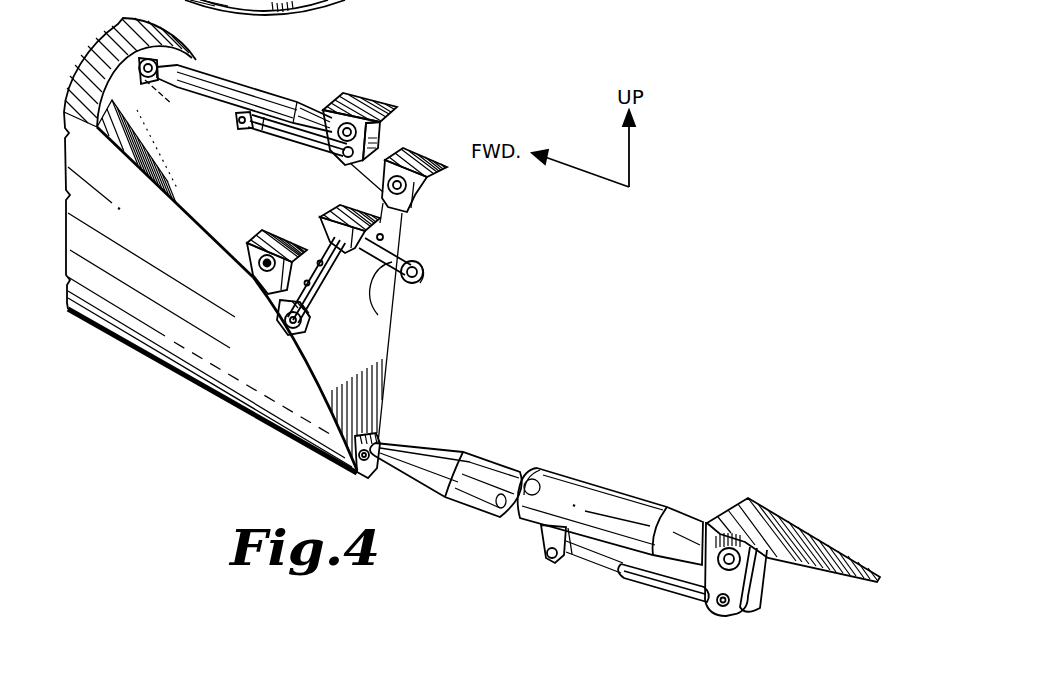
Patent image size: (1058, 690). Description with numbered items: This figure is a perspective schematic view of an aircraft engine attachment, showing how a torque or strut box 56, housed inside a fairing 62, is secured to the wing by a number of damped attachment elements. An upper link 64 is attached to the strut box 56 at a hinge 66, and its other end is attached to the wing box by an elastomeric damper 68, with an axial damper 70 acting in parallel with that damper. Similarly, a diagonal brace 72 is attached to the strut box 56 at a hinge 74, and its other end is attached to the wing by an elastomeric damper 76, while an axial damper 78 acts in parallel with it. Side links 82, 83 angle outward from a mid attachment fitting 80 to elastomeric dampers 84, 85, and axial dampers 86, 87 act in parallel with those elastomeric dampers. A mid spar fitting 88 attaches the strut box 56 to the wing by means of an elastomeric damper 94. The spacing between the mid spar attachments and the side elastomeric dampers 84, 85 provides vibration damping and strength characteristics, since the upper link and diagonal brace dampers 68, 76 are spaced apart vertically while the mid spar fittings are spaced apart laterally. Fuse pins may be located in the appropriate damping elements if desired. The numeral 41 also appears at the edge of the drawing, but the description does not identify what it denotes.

The fragment of adjacent component 41 is at (294, 9).
The strut box 56 is at (163, 60).
The fairing 62 is at (157, 343).
The upper link 64 is at (270, 90).
The hinge 66 is at (154, 80).
The elastomeric damper 68 is at (386, 130).
The axial damper 70 is at (308, 148).
The diagonal brace 72 is at (603, 510).
The hinge 74 is at (368, 435).
The elastomeric damper 76 is at (714, 522).
The axial damper 78 is at (635, 585).
The mid attachment fitting 80 is at (322, 230).
The side link 82 is at (318, 296).
The side link 83 is at (378, 315).
The elastomeric damper 84 is at (292, 336).
The elastomeric damper 85 is at (425, 280).
The axial damper 86 is at (272, 311).
The axial damper 87 is at (388, 250).
The mid spar fitting 88 is at (250, 272).
The elastomeric damper 94 is at (250, 273).